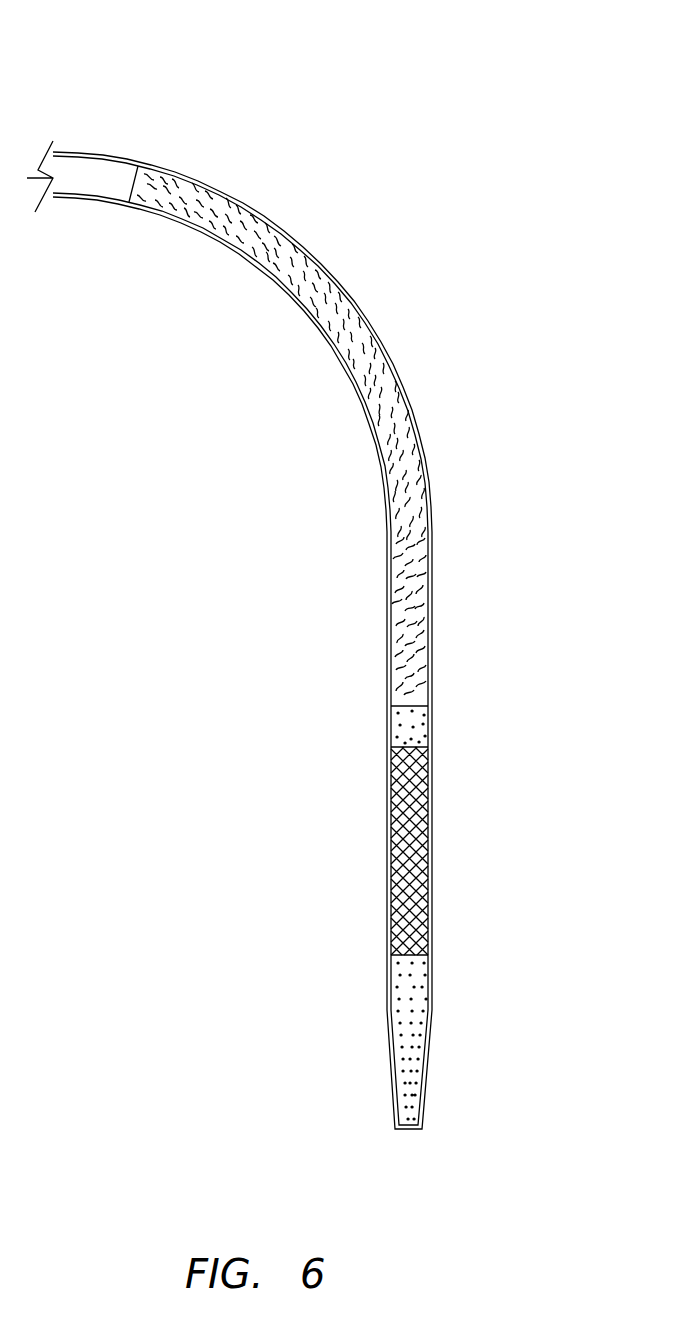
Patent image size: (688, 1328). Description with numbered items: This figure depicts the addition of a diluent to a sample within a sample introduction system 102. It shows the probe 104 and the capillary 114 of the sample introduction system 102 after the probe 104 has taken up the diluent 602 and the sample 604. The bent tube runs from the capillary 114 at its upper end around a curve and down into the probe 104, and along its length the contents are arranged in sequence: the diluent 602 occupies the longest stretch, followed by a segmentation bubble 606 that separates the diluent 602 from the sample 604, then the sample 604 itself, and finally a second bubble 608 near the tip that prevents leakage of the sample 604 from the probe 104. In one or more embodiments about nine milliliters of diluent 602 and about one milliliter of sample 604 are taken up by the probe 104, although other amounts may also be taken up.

The sample introduction system 102 is at (283, 157).
The capillary 114 is at (80, 151).
The probe 104 is at (433, 520).
The diluent 602 is at (400, 350).
The segmentation bubble 606 is at (433, 727).
The sample 604 is at (433, 858).
The second bubble 608 is at (433, 1008).